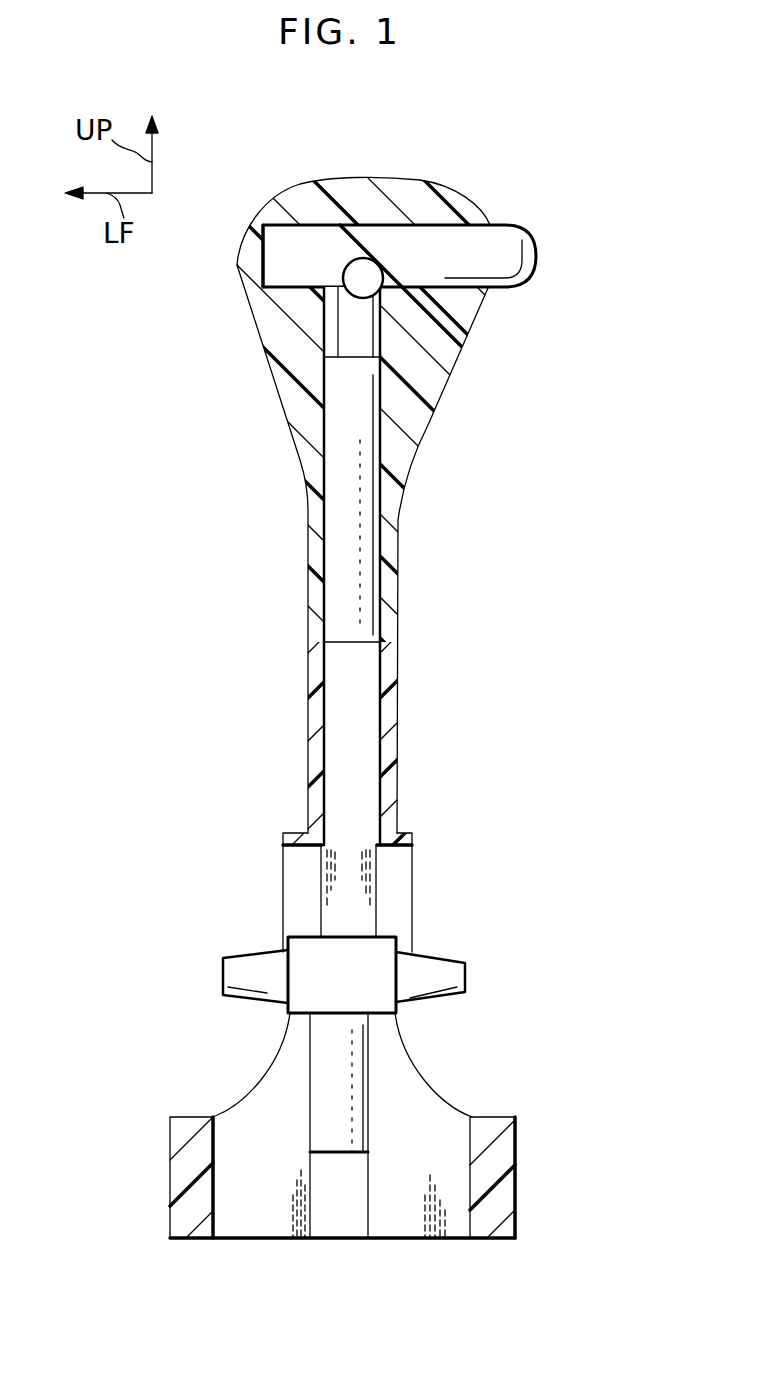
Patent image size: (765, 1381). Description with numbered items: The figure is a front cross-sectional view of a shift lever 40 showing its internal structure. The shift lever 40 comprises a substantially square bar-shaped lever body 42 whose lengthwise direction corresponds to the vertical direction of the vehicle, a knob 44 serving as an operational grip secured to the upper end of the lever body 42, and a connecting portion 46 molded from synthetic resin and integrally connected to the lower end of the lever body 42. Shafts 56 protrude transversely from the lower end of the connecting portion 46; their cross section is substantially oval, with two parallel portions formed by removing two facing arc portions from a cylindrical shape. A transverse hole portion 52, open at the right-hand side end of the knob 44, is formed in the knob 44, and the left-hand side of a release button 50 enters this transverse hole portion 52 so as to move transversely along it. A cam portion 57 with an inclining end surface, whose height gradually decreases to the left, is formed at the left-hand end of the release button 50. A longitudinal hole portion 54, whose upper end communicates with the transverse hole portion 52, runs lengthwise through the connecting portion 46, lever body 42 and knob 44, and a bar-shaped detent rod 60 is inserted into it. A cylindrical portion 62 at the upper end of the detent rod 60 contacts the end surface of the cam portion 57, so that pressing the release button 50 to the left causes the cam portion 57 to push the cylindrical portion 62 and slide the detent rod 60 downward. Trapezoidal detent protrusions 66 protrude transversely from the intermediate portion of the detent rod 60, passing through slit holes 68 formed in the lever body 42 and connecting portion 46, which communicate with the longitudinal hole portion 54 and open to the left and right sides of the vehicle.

The shift lever 40 is at (487, 175).
The lever body 42 is at (413, 862).
The knob 44 is at (443, 390).
The connecting portion 46 is at (405, 1240).
The release button 50 is at (520, 263).
The transverse hole portion 52 is at (312, 236).
The longitudinal hole portion 54 is at (372, 798).
The shaft 56 is at (180, 1177).
The cam portion 57 is at (342, 260).
The detent rod 60 is at (373, 710).
The cylindrical portion 62 is at (383, 258).
The detent protrusion 66 is at (223, 967).
The slit hole 68 is at (412, 848).